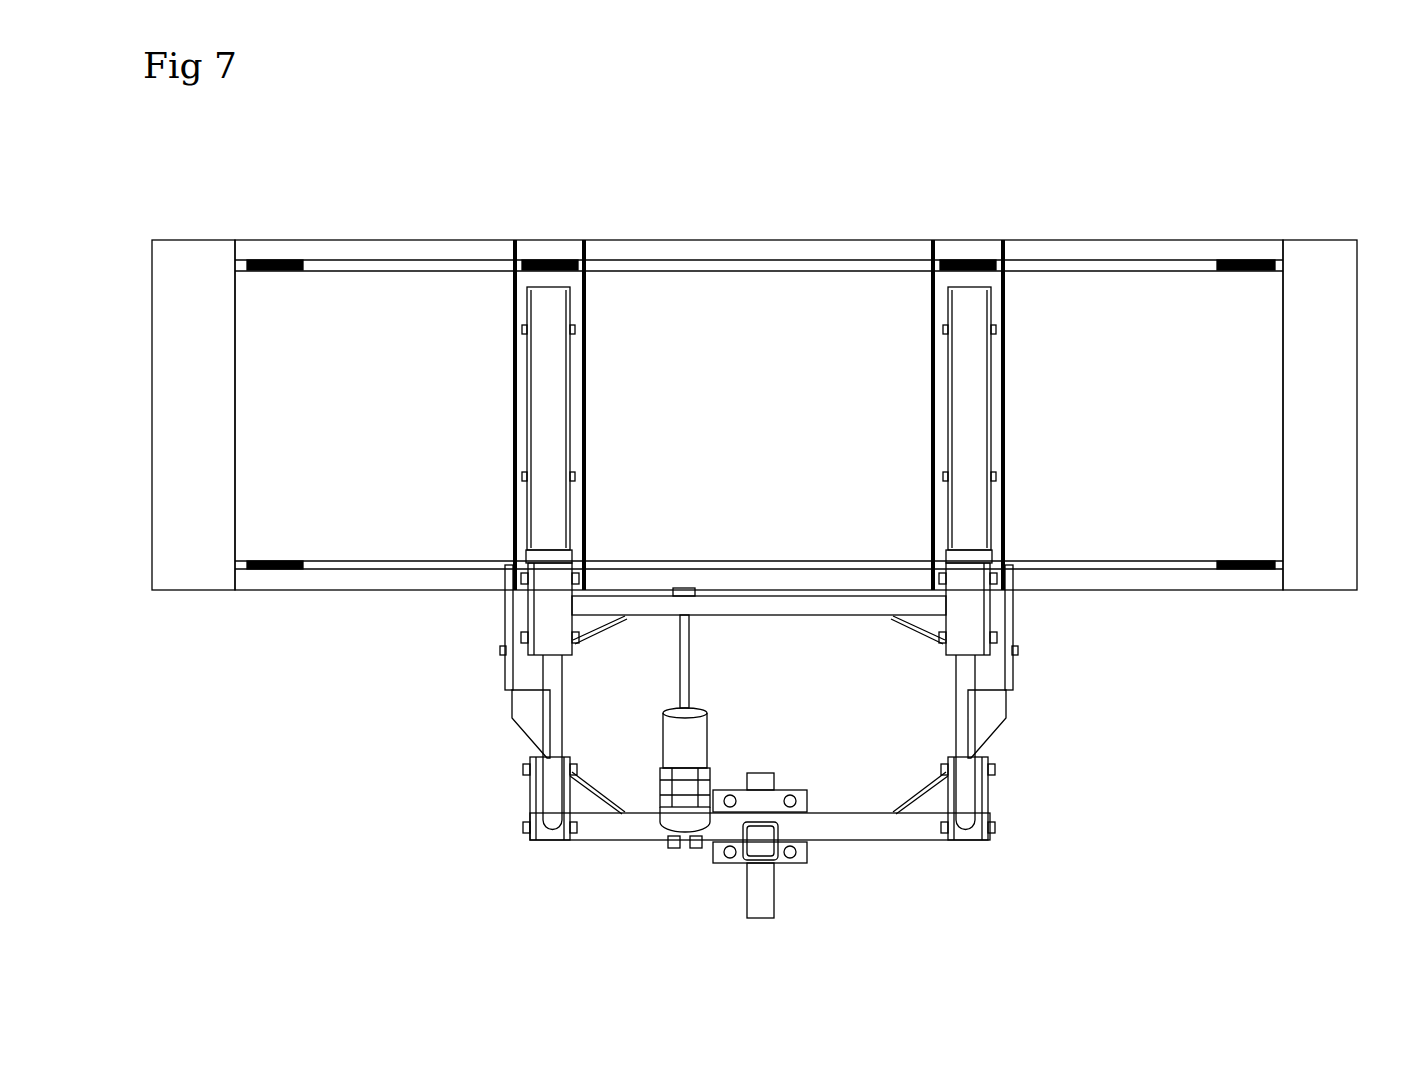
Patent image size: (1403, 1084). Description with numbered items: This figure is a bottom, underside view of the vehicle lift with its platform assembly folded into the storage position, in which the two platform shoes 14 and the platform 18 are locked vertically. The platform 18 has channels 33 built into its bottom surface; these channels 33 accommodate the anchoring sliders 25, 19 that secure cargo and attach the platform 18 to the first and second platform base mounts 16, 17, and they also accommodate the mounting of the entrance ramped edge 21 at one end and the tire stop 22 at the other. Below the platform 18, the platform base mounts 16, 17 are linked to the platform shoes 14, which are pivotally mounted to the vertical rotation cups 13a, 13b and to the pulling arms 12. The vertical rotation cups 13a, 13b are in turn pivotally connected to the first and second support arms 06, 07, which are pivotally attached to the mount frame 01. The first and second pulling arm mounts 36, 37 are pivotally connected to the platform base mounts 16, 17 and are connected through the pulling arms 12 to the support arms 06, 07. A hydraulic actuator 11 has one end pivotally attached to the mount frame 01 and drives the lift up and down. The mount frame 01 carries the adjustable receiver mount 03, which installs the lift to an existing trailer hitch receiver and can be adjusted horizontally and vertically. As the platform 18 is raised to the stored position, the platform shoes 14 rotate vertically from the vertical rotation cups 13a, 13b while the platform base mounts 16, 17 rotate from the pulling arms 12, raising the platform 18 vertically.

The mount frame 01 is at (832, 828).
The adjustable receiver mount 03 is at (760, 895).
The first support arm 06 is at (549, 763).
The second support arm 07 is at (972, 773).
The hydraulic actuator 11 is at (680, 752).
The pulling arm 12 is at (507, 618).
The vertical rotation cup 13a is at (548, 625).
The vertical rotation cup 13b is at (968, 619).
The platform shoe 14 is at (545, 377).
The first platform base mount 16 is at (521, 318).
The second platform base mount 17 is at (993, 320).
The platform 18 is at (738, 428).
The anchoring slider 19 is at (279, 264).
The entrance ramped edge 21 is at (175, 266).
The tire stop 22 is at (1318, 265).
The anchoring slider 25 is at (968, 262).
The channel 33 is at (420, 265).
The first pulling arm mount 36 is at (512, 704).
The second pulling arm mount 37 is at (1007, 705).